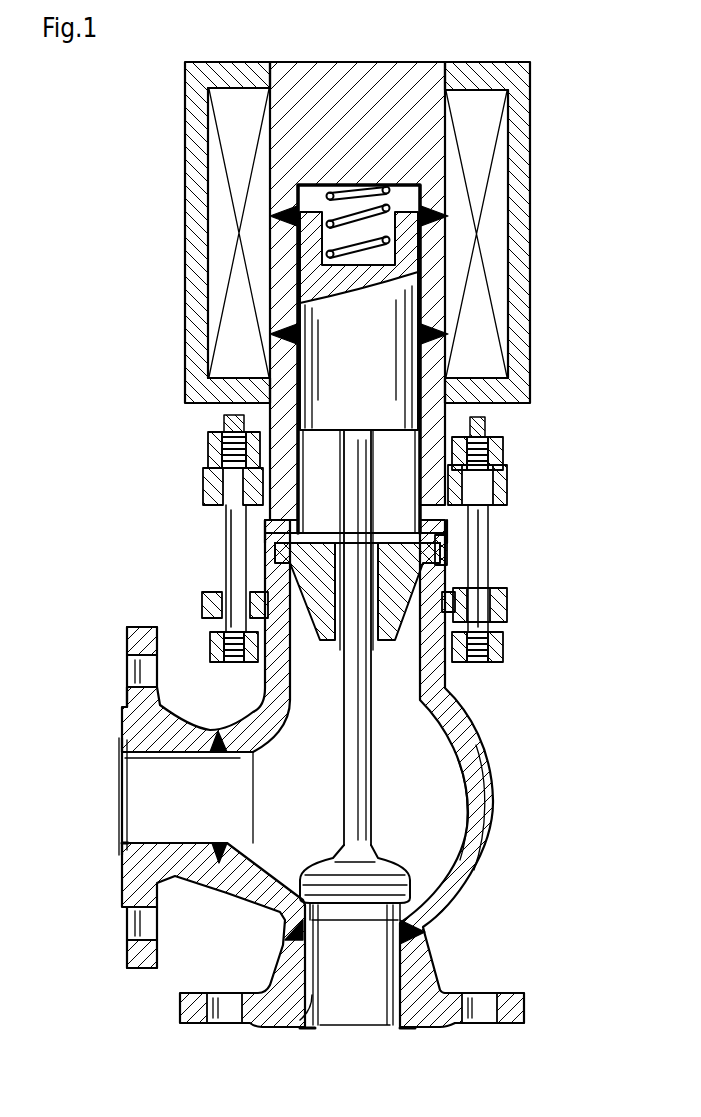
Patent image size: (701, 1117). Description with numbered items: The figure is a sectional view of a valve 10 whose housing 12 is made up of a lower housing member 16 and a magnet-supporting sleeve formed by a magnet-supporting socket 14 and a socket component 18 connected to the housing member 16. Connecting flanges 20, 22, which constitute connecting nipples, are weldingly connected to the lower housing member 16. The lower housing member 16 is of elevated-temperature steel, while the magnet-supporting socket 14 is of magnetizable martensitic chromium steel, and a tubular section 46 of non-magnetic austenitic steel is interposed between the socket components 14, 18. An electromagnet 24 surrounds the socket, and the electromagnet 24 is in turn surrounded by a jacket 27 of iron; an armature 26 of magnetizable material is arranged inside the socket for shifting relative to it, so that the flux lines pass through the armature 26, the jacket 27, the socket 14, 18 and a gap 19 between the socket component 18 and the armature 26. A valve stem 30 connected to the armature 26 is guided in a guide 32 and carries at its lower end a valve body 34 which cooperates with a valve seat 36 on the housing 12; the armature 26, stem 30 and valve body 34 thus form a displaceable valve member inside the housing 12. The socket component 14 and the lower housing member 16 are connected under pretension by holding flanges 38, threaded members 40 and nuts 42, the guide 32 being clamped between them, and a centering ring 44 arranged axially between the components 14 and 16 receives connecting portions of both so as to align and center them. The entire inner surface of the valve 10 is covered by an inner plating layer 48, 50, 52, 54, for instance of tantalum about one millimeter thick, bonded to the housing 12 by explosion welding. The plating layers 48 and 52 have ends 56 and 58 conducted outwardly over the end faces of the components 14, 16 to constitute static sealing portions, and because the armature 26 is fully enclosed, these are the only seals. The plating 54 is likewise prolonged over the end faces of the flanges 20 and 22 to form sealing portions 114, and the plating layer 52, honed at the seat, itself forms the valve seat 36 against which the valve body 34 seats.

The valve 10 is at (572, 116).
The housing 12 is at (481, 743).
The magnet-supporting socket 14 is at (455, 410).
The lower housing member 16 is at (488, 842).
The magnet-supporting socket component 18 is at (400, 78).
The gap 19 is at (446, 186).
The connecting flange 20 is at (440, 1030).
The connecting flange 22 is at (124, 908).
The electromagnet 24 is at (232, 160).
The armature 26 is at (380, 346).
The jacket 27 is at (188, 108).
The valve stem 30 is at (356, 752).
The guide 32 is at (322, 628).
The valve body 34 is at (374, 872).
The valve seat 36 is at (292, 912).
The holding flange 38 is at (204, 480).
The threaded member 40 is at (228, 534).
The nut 42 is at (220, 438).
The centering ring 44 is at (452, 546).
The tubular section 46 is at (436, 278).
The plating layer 48 is at (314, 352).
The plating layer 50 is at (359, 258).
The plating layer 52 is at (474, 782).
The plating layer 54 is at (150, 758).
The sealing portion 56 is at (466, 524).
The sealing portion 58 is at (456, 567).
The sealing portion 114 is at (120, 848).